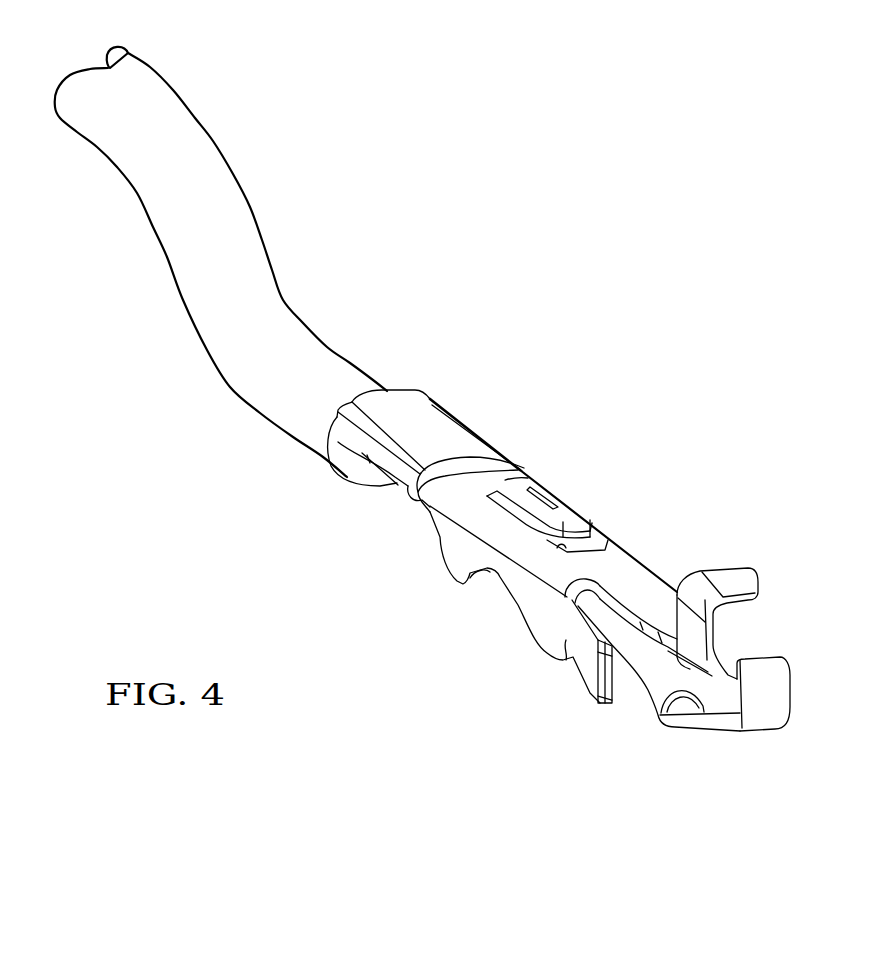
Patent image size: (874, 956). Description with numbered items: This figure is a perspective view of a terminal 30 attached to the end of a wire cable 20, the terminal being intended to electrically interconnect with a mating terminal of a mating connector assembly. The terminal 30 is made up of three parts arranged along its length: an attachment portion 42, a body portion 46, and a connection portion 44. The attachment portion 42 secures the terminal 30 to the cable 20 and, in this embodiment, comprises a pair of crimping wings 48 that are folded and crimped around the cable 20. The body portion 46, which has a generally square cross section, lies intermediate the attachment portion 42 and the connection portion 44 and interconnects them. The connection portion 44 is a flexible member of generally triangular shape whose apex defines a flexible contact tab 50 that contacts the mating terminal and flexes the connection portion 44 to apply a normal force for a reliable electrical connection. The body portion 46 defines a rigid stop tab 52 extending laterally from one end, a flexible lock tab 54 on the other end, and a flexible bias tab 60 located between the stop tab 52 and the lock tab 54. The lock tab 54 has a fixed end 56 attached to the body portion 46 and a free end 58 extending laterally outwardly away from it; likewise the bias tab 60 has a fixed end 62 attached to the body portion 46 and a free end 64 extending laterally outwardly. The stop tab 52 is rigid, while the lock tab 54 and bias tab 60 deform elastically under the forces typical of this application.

The wire cable 20 is at (187, 305).
The terminal 30 is at (670, 329).
The attachment portion 42 is at (470, 383).
The connection portion 44 is at (811, 623).
The body portion 46 is at (648, 503).
The crimping wings 48 is at (395, 482).
The flexible contact tab 50 is at (660, 730).
The rigid stop tab 52 is at (733, 583).
The flexible lock tab 54 is at (543, 512).
The fixed end 56 is at (517, 487).
The free end 58 is at (581, 524).
The flexible bias tab 60 is at (590, 653).
The fixed end 62 is at (573, 620).
The free end 64 is at (607, 703).